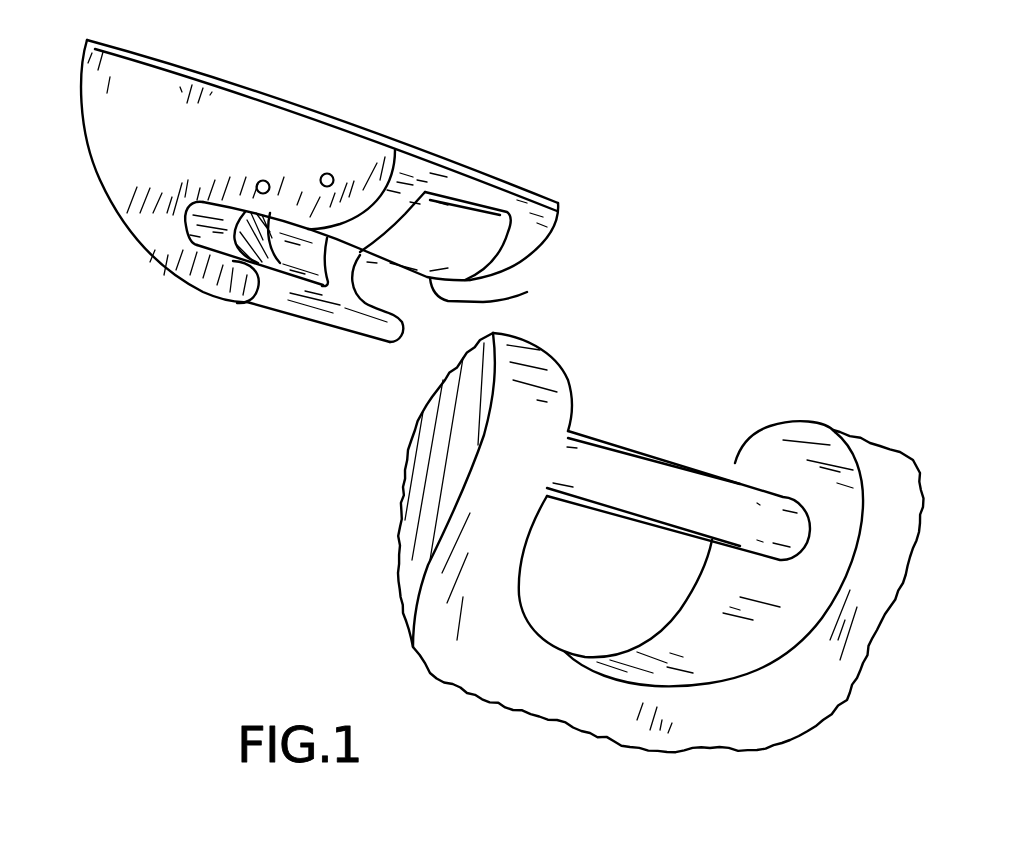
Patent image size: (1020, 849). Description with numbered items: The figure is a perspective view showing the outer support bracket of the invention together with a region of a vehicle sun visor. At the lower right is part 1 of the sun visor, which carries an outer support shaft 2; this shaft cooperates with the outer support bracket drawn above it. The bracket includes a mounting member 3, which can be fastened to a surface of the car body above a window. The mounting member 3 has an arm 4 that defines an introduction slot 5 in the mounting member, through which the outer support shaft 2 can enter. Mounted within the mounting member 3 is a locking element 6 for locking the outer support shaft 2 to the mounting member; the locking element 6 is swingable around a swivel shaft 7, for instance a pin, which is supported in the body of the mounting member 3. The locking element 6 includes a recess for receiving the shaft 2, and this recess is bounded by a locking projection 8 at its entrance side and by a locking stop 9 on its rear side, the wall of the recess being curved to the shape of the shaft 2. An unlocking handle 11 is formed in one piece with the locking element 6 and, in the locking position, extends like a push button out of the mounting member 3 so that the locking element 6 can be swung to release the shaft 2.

The part of a vehicle sun visor 1 is at (533, 390).
The outer support shaft 2 is at (593, 453).
The mounting member 3 is at (118, 118).
The arm 4 is at (290, 312).
The introduction slot 5 is at (382, 292).
The locking element 6 is at (278, 223).
The swivel shaft 7 is at (266, 180).
The locking projection 8 is at (527, 292).
The locking stop 9 is at (288, 256).
The unlocking handle 11 is at (462, 221).